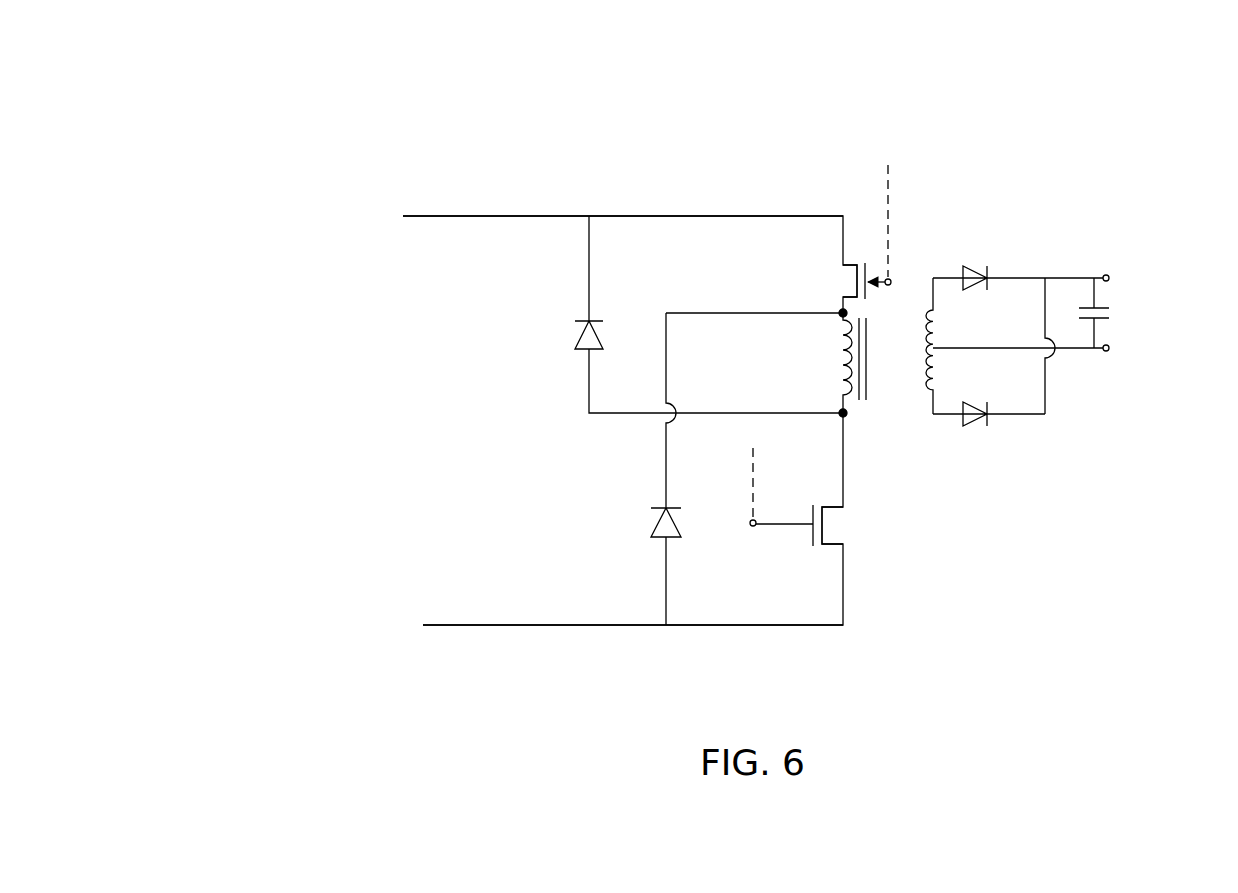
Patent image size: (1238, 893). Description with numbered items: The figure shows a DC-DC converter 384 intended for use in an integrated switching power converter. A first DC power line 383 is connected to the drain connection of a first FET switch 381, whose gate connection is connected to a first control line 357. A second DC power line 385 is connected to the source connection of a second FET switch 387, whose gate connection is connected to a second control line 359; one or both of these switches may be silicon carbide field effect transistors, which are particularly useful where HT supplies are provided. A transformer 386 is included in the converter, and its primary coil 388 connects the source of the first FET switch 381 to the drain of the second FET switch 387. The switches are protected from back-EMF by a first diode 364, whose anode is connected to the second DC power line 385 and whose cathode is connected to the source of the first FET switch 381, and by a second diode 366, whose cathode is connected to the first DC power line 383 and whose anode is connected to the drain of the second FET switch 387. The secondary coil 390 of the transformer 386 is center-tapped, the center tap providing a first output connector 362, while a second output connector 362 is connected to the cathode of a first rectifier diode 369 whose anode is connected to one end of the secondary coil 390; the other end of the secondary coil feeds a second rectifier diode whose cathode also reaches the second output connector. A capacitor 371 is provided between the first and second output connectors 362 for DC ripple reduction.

The DC-DC converter 384 is at (353, 100).
The first DC power line 383 is at (530, 215).
The second DC power line 385 is at (470, 627).
The first FET switch 381 is at (863, 250).
The first control line 357 is at (887, 206).
The second FET switch 387 is at (802, 540).
The second control line 359 is at (783, 486).
The second diode 366 is at (557, 337).
The first diode 364 is at (637, 535).
The transformer 386 is at (867, 410).
The primary coil 388 is at (838, 344).
The secondary coil 390 is at (945, 318).
The first rectifier diode 369 is at (987, 262).
The output connector 362 is at (1152, 263).
The capacitor 371 is at (1090, 357).